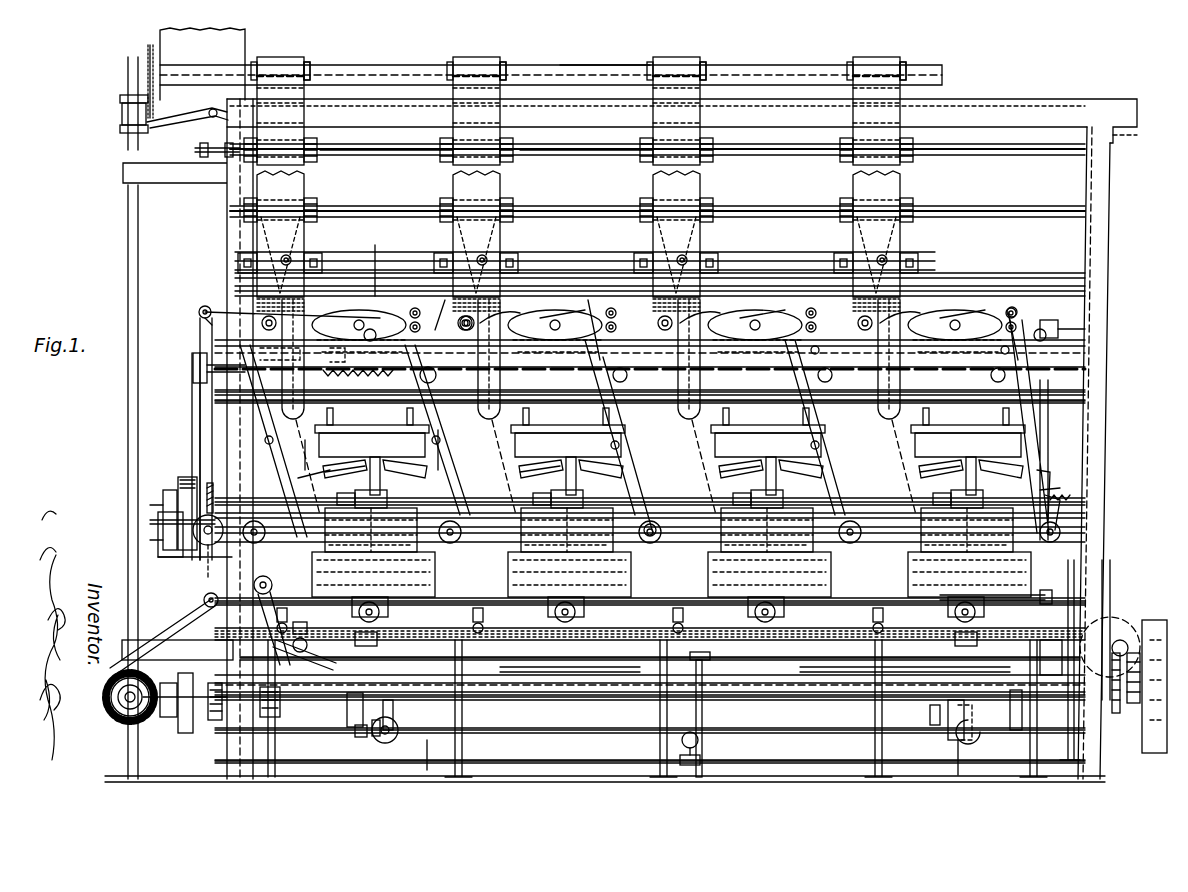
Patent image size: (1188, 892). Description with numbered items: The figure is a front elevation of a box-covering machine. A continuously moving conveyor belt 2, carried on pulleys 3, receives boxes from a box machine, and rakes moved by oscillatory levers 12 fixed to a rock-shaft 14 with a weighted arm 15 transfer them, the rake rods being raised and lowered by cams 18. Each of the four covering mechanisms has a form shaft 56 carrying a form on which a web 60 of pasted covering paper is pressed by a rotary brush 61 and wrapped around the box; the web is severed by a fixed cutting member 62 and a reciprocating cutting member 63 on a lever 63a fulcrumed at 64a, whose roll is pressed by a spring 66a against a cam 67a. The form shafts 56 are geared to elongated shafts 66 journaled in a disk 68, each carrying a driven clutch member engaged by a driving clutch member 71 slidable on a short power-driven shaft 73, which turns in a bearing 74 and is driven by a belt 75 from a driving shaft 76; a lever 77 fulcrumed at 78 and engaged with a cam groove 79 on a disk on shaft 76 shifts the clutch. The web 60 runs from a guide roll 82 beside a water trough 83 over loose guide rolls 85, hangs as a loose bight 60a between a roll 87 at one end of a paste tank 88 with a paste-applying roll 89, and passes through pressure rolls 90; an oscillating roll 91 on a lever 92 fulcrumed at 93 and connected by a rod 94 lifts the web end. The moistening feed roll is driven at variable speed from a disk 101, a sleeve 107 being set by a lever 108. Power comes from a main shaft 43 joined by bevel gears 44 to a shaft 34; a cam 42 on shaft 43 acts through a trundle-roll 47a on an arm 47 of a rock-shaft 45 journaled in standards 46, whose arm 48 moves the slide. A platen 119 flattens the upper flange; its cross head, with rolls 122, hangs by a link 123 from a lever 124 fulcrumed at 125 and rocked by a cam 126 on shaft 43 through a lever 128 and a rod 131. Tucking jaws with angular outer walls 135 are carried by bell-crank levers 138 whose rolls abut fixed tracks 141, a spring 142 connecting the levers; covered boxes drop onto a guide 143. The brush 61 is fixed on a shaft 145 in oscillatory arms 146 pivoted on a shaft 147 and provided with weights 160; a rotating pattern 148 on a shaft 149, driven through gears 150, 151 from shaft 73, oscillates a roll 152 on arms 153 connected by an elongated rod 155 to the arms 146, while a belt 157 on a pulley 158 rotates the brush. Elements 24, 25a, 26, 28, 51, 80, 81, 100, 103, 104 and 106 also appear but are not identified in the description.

The conveyor belt 2 is at (1128, 625).
The pulleys 3 is at (1150, 630).
The oscillatory levers 12 is at (345, 735).
The rock-shaft 14 is at (470, 757).
The weighted arm 15 is at (685, 740).
The cams 18 is at (450, 300).
The shaft 24 is at (838, 657).
The bearing 25a is at (375, 640).
The rail 26 is at (620, 580).
The coupling 28 is at (690, 655).
The power-driven shaft 34 is at (130, 722).
The cam 42 is at (345, 715).
The power-driven shaft 43 is at (345, 710).
The bevel gears 44 is at (170, 718).
The short rock-shaft 45 is at (860, 733).
The fixed standards 46 is at (385, 742).
The arm 47 is at (360, 738).
The trundle-roll 47a is at (372, 728).
The arm 48 is at (393, 708).
The lever 51 is at (435, 740).
The form shaft 56 is at (572, 486).
The web 60 is at (306, 96).
The loose bight 60a is at (494, 418).
The rotary brush 61 is at (455, 522).
The fixed cutting member 62 is at (1040, 470).
The reciprocating cutting member 63 is at (1060, 485).
The lever 63a is at (1060, 498).
The fulcrum 64a is at (1040, 588).
The elongated shafts 66 is at (485, 505).
The spring 66a is at (1060, 532).
The cam 67a is at (975, 727).
The disk 68 is at (300, 478).
The driving clutch member 71 is at (205, 480).
The short power driven shaft 73 is at (190, 500).
The bearing 74 is at (163, 495).
The belt 75 is at (185, 575).
The driving shaft 76 is at (185, 733).
The lever 77 is at (290, 645).
The fulcrum 78 is at (260, 595).
The cam groove 79 is at (270, 717).
The rail 80 is at (648, 288).
The rail 81 is at (512, 257).
The guide roll 82 is at (306, 68).
The trough 83 is at (600, 68).
The loose guide rolls 85 is at (505, 155).
The roll 87 is at (335, 330).
The paste tank 88 is at (940, 312).
The paste-applying roll 89 is at (565, 312).
The pressure rolls 90 is at (412, 315).
The oscillating roll 91 is at (820, 350).
The lever 92 is at (207, 306).
The fulcrum 93 is at (458, 322).
The rod 94 is at (202, 327).
The shaft 100 is at (385, 60).
The disk 101 is at (148, 52).
The frame 103 is at (128, 278).
The collar 104 is at (118, 100).
The rod 106 is at (135, 75).
The sleeve 107 is at (120, 120).
The lever 108 is at (200, 128).
The platen 119 is at (560, 425).
The rolls 122 is at (330, 356).
The link 123 is at (365, 330).
The lever 124 is at (375, 268).
The fulcrum 125 is at (1050, 328).
The cam 126 is at (1070, 705).
The lever 128 is at (1052, 650).
The rod 131 is at (1048, 418).
The angular outer wall 135 is at (395, 462).
The bell-crank levers 138 is at (440, 430).
The fixed horizontal tracks 141 is at (755, 378).
The spring 142 is at (438, 375).
The guide 143 is at (528, 668).
The brush shaft 145 is at (660, 518).
The oscillatory arms 146 is at (440, 480).
The shaft 147 is at (205, 375).
The pattern 148 is at (158, 525).
The shaft 149 is at (200, 522).
The gear 150 is at (180, 510).
The gear 151 is at (188, 460).
The roll 152 is at (225, 535).
The oscillatory arms 153 is at (250, 408).
The rod 155 is at (553, 398).
The belt 157 is at (465, 460).
The pulley 158 is at (628, 378).
The weights 160 is at (592, 300).